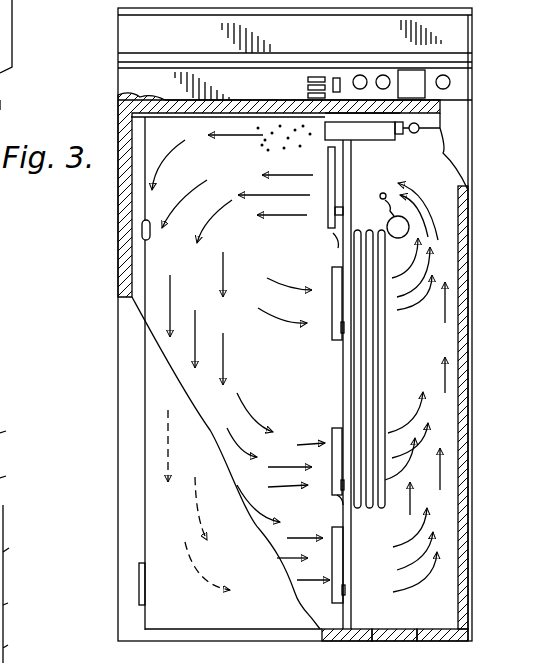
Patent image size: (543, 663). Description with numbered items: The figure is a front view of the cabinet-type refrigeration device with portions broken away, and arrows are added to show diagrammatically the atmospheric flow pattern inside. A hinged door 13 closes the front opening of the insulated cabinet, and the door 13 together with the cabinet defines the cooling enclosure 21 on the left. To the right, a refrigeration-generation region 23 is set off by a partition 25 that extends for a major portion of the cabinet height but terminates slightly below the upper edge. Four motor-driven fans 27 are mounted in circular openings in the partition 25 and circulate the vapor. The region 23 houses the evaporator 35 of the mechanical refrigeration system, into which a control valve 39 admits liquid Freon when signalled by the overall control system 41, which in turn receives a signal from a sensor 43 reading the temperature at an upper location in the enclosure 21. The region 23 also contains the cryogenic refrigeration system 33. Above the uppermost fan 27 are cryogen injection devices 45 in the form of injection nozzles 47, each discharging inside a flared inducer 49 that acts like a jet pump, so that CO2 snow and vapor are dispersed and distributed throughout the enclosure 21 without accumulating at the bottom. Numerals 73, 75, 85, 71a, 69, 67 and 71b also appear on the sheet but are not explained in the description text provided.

The hinged door 13 is at (243, 610).
The cooling enclosure 21 is at (241, 358).
The refrigeration-generation region 23 is at (415, 415).
The partition 25 is at (350, 368).
The fans 27 is at (333, 527).
The cryogenic refrigeration system 33 is at (424, 120).
The evaporator 35 is at (353, 345).
The control valve 39 is at (386, 200).
The control system 41 is at (390, 37).
The sensor 43 is at (142, 227).
The cryogen injection devices 45 is at (350, 116).
The injection nozzles 47 is at (407, 134).
The inducer 49 is at (372, 133).
The bottom wall 73 is at (441, 646).
The bottom insulation 75 is at (347, 646).
The bottom panel 85 is at (394, 646).
The adjacent figure element 71a is at (21, 442).
The adjacent figure element 69 is at (15, 567).
The adjacent figure element 67 is at (17, 556).
The adjacent figure element 71b is at (22, 606).